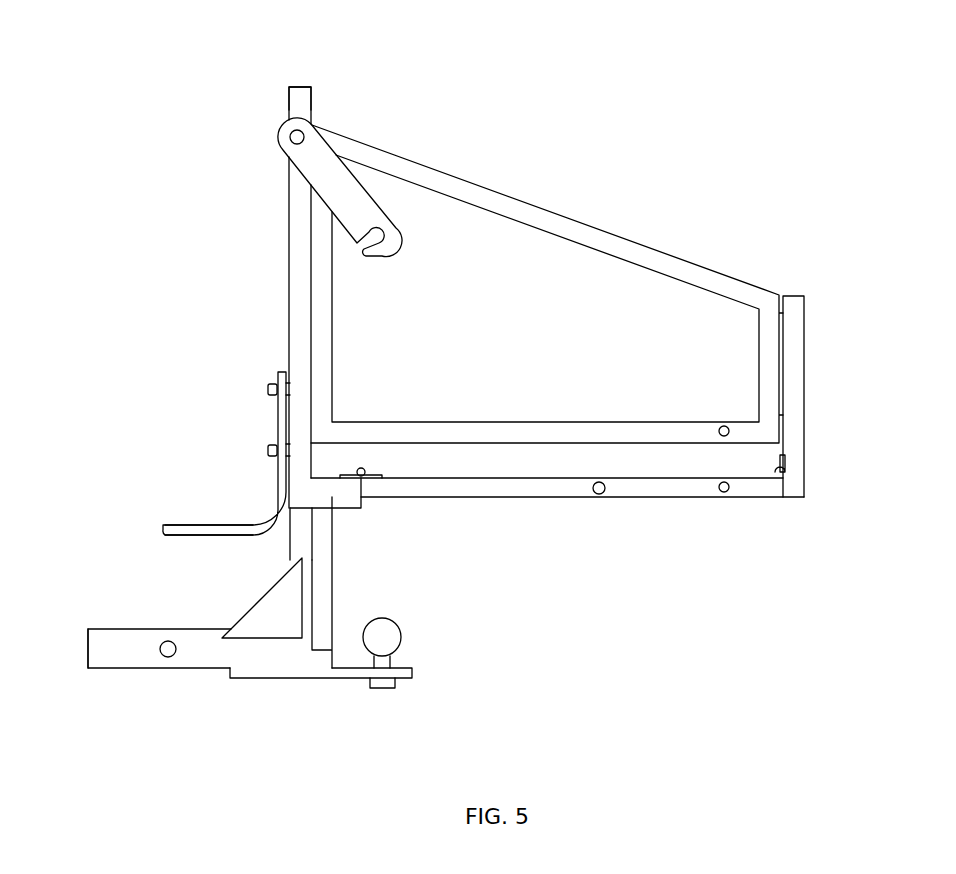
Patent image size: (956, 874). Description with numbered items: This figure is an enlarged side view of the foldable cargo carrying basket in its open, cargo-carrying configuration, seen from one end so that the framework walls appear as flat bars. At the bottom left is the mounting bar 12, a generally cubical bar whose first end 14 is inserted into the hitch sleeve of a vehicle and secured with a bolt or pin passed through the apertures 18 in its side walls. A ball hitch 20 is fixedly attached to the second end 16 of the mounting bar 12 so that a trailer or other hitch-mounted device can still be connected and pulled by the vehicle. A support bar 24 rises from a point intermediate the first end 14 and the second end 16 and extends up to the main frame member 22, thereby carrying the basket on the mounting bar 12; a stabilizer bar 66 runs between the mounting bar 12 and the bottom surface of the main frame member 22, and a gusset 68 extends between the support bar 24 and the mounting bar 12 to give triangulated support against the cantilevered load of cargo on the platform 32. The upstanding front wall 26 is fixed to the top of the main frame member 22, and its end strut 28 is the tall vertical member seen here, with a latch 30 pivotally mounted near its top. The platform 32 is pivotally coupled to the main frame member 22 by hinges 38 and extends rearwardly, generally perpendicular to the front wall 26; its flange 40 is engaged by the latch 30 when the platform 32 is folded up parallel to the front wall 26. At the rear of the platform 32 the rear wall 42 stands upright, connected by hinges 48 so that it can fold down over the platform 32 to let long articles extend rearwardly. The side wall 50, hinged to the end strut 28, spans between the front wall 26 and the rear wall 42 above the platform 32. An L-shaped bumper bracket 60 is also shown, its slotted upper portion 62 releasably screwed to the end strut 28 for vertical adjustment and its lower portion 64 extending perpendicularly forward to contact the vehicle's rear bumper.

The mounting bar 12 is at (124, 628).
The first end 14 is at (87, 655).
The second end 16 is at (412, 674).
The apertures 18 is at (171, 658).
The ball hitch 20 is at (400, 627).
The main frame member 22 is at (353, 502).
The support bar 24 is at (292, 543).
The front wall 26 is at (295, 78).
The end struts 28 is at (289, 268).
The latches 30 is at (395, 250).
The platform 32 is at (538, 499).
The hinges 38 is at (370, 474).
The flanges 40 is at (600, 496).
The rear wall 42 is at (797, 292).
The hinges 48 is at (780, 464).
The side walls 50 is at (563, 210).
The bumper brackets 60 is at (253, 498).
The upper portion 62 is at (277, 410).
The lower portion 64 is at (203, 527).
The stabilizer bars 66 is at (333, 579).
The gussets 68 is at (248, 608).